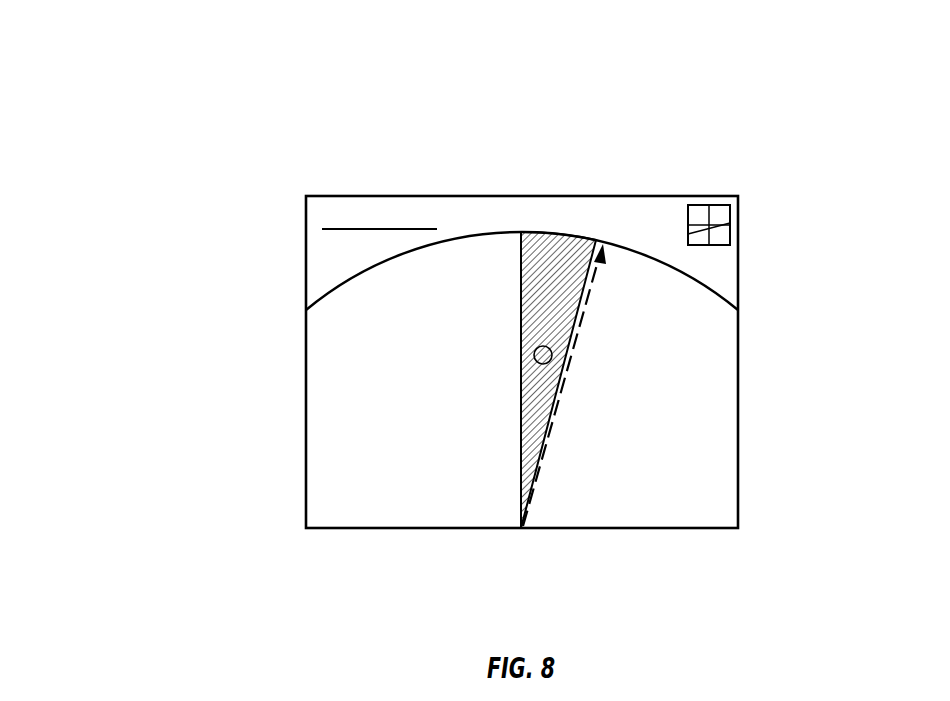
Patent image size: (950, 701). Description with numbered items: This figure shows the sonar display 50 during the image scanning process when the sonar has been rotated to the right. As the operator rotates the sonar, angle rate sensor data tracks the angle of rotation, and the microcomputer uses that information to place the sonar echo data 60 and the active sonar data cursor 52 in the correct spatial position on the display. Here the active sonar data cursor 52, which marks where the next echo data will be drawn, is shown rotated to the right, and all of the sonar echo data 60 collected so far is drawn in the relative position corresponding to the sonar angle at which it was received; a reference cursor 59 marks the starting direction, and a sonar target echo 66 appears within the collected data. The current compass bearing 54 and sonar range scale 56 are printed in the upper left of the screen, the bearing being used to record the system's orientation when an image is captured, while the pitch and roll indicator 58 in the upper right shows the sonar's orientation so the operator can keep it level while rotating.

The sonar display 50 is at (543, 146).
The active sonar data cursor 52 is at (614, 427).
The compass bearing 54 is at (317, 218).
The sonar range scale 56 is at (476, 121).
The pitch and roll indicator 58 is at (737, 185).
The reference cursor 59 is at (385, 570).
The sonar echo data 60 is at (521, 432).
The sonar target echo 66 is at (535, 358).